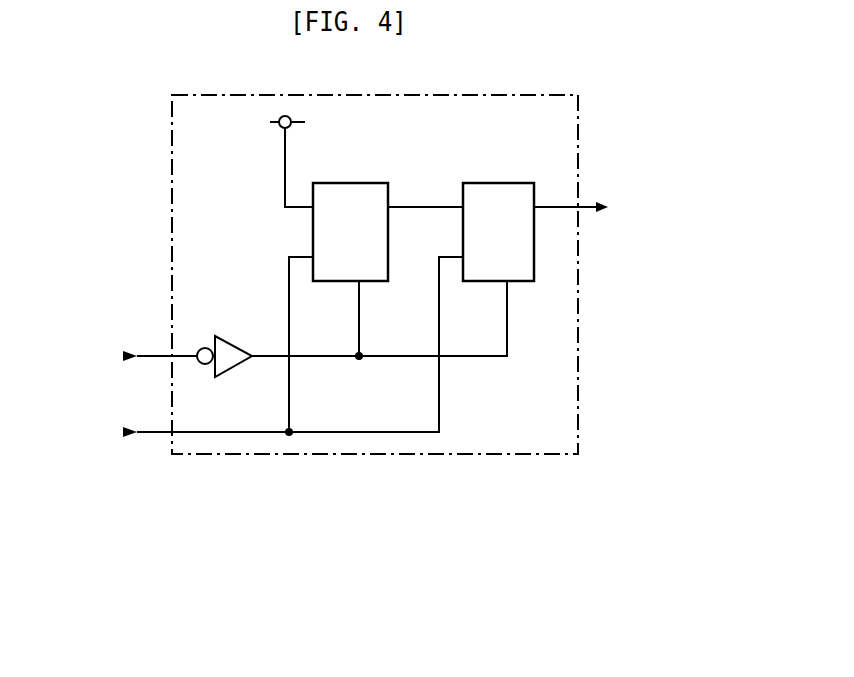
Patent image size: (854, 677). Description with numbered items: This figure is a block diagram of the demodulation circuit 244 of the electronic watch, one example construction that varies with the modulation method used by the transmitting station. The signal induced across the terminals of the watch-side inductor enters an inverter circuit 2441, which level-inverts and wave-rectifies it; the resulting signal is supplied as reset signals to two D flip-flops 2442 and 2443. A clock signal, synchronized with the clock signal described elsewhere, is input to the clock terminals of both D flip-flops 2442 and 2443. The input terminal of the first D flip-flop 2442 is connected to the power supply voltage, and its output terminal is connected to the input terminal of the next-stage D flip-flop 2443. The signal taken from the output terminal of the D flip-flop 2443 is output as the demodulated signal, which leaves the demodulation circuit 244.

The demodulation circuit 244 is at (390, 456).
The inverter circuit 2441 is at (230, 338).
The D flip-flop 2442 is at (360, 183).
The D flip-flop 2443 is at (517, 183).